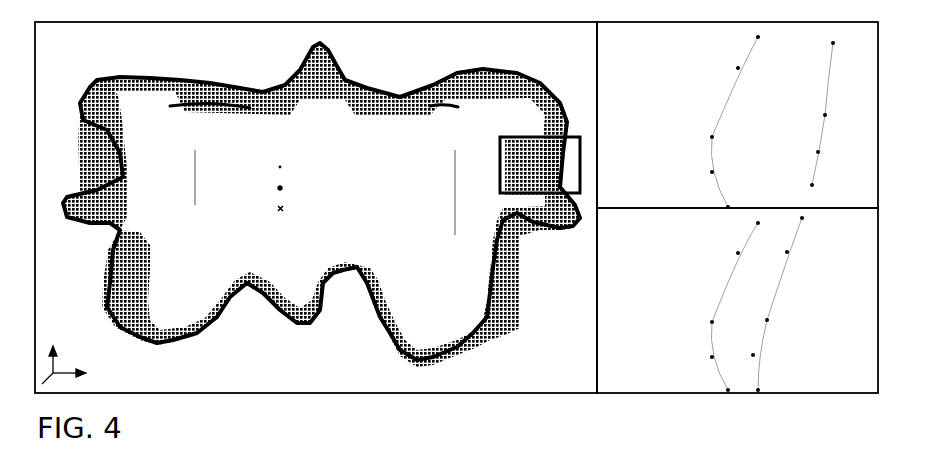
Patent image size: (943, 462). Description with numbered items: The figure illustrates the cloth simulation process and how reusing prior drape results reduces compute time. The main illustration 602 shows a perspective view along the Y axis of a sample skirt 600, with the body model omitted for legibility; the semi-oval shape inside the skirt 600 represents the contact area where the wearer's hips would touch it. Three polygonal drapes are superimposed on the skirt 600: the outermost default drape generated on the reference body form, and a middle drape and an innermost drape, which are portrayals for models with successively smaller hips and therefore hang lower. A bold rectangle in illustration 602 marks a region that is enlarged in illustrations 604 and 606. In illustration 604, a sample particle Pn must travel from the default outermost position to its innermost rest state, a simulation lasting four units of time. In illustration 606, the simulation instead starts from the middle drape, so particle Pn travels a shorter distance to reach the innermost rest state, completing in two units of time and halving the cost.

The skirt 600 is at (37, 23).
The illustration 602 is at (316, 208).
The illustration 604 is at (737, 115).
The illustration 606 is at (737, 301).